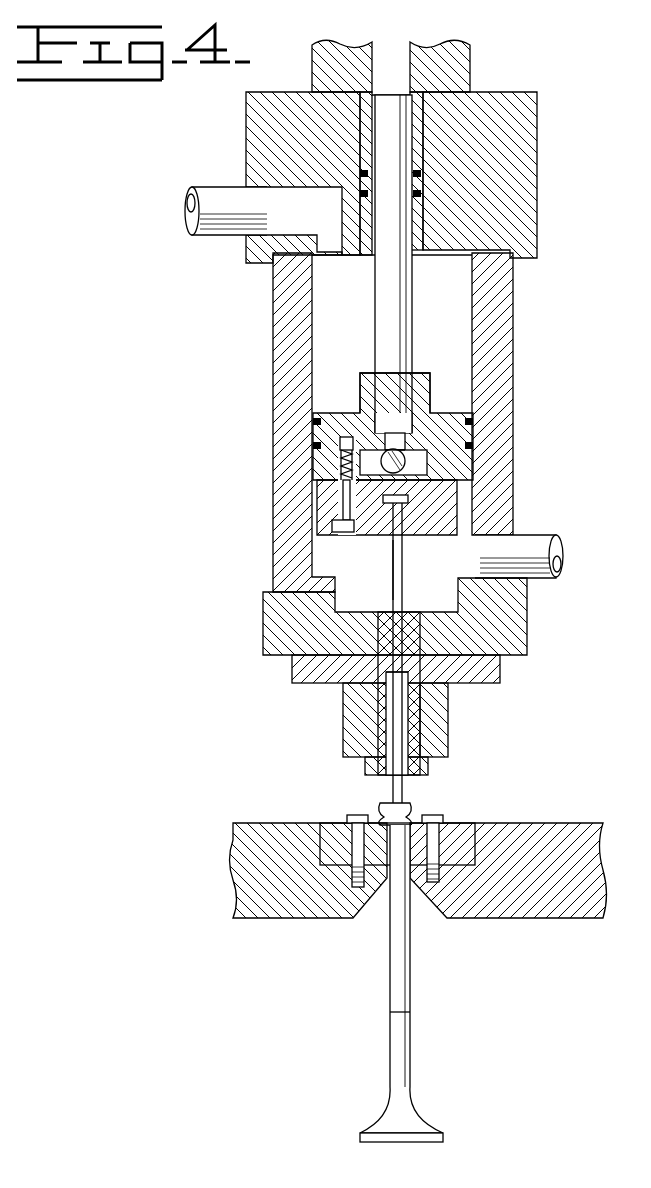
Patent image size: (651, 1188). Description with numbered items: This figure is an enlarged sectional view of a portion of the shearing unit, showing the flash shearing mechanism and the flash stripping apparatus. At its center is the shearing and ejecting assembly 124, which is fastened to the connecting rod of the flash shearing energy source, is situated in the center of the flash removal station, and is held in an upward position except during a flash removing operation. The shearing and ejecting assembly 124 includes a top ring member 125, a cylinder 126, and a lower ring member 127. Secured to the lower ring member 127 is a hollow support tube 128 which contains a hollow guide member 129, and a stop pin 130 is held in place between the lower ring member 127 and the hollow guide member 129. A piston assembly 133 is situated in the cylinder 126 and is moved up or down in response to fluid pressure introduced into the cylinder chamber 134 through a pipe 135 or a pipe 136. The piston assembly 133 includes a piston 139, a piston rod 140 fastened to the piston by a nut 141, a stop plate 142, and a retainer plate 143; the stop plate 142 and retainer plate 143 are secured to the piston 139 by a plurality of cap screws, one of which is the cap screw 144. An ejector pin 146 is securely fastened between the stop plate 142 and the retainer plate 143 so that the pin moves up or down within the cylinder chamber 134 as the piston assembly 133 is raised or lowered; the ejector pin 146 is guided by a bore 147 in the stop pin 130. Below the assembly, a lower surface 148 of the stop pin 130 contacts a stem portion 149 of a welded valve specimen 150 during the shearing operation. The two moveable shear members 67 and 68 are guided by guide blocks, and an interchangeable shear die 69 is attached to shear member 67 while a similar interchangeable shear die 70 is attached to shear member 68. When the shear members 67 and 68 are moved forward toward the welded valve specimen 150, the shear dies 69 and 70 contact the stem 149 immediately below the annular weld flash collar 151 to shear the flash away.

The shearing and ejecting assembly 124 is at (260, 434).
The top ring member 125 is at (312, 52).
The cylinder 126 is at (275, 317).
The lower ring member 127 is at (265, 645).
The hollow support tube 128 is at (448, 742).
The hollow guide member 129 is at (428, 770).
The stop pin 130 is at (408, 634).
The piston assembly 133 is at (455, 388).
The cylinder chamber 134 is at (360, 325).
The pipe 135 is at (200, 190).
The pipe 136 is at (556, 540).
The piston 139 is at (366, 376).
The piston rod 140 is at (378, 272).
The nut 141 is at (418, 449).
The stop plate 142 is at (455, 497).
The retainer plate 143 is at (430, 530).
The cap screw 144 is at (340, 499).
The ejector pin 146 is at (392, 562).
The bore 147 is at (394, 634).
The lower surface 148 is at (435, 712).
The stem portion 149 is at (391, 948).
The welded valve specimen 150 is at (424, 999).
The annular weld flash collar 151 is at (383, 806).
The moveable shear member 67 is at (285, 883).
The moveable shear member 68 is at (552, 883).
The interchangeable shear die 69 is at (330, 841).
The interchangeable shear die 70 is at (458, 845).